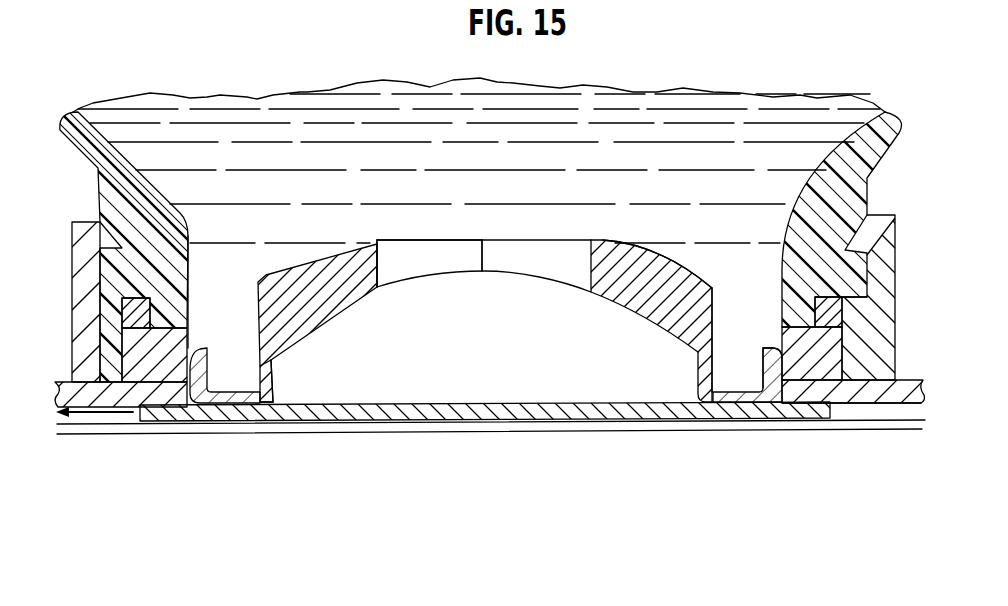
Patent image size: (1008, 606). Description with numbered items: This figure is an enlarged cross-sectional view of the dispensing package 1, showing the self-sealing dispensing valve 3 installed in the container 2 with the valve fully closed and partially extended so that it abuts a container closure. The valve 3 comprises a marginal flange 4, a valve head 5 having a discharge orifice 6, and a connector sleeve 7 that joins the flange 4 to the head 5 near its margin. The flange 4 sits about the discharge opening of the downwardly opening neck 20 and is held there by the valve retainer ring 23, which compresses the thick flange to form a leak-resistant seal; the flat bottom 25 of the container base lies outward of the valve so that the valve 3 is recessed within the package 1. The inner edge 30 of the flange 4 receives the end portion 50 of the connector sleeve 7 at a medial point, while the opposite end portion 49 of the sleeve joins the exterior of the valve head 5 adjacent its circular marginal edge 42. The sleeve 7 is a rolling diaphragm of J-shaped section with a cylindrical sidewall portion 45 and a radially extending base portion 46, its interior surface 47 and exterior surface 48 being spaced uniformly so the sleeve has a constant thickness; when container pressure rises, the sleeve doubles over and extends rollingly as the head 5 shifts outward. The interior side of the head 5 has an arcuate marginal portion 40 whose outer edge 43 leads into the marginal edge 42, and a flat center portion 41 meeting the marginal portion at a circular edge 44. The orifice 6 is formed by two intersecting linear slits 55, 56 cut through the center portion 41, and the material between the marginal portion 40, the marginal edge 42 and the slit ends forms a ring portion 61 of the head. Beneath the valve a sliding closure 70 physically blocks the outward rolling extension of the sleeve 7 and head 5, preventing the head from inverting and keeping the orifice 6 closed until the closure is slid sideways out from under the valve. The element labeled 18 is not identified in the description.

The dispensing package 1 is at (706, 76).
The container 2 is at (482, 234).
The self-sealing dispensing valve 3 is at (337, 300).
The marginal flange 4 is at (183, 328).
The valve head 5 is at (677, 322).
The discharge orifice 6 is at (493, 233).
The connector sleeve 7 is at (274, 377).
The filling material 18 is at (448, 143).
The neck 20 is at (827, 190).
The valve retainer ring 23 is at (855, 395).
The bottom 25 is at (853, 403).
The inner edge 30 is at (737, 350).
The marginal portion 40 is at (322, 300).
The center portion 41 is at (433, 240).
The marginal edge 42 is at (715, 297).
The outer edge 43 is at (714, 273).
The circular edge 44 is at (372, 240).
The cylindrical sidewall portion 45 is at (699, 355).
The base portion 46 is at (752, 361).
The interior surface 47 is at (224, 319).
The exterior surface 48 is at (274, 400).
The end portion 49 is at (273, 364).
The opposite end portion 50 is at (193, 359).
The slit 55 is at (518, 265).
The slit 56 is at (503, 256).
The ring portion 61 is at (650, 298).
The sliding closure 70 is at (610, 418).